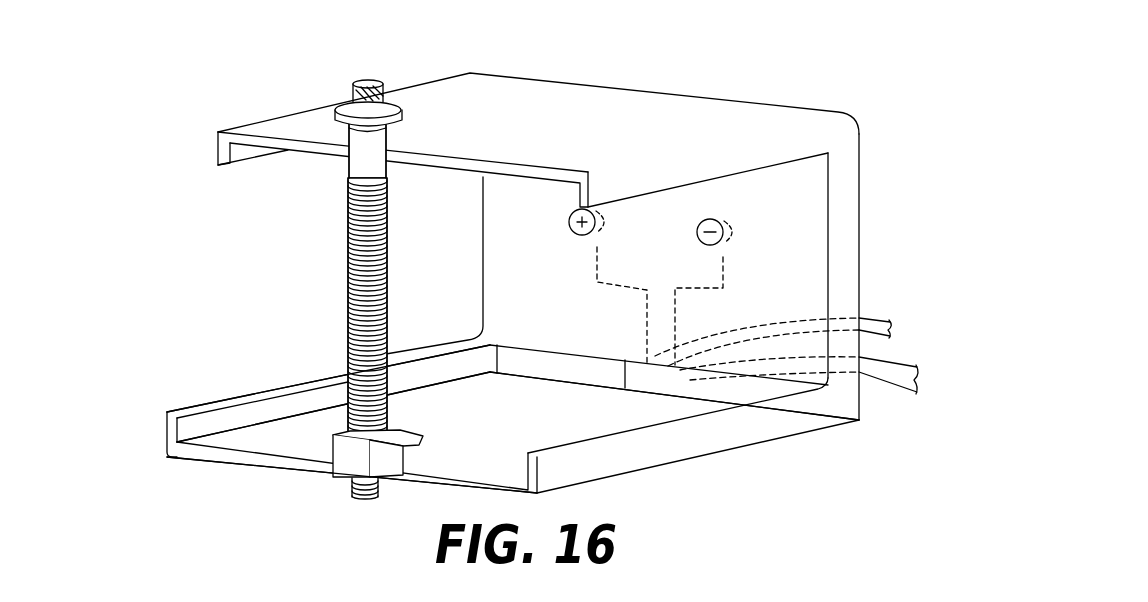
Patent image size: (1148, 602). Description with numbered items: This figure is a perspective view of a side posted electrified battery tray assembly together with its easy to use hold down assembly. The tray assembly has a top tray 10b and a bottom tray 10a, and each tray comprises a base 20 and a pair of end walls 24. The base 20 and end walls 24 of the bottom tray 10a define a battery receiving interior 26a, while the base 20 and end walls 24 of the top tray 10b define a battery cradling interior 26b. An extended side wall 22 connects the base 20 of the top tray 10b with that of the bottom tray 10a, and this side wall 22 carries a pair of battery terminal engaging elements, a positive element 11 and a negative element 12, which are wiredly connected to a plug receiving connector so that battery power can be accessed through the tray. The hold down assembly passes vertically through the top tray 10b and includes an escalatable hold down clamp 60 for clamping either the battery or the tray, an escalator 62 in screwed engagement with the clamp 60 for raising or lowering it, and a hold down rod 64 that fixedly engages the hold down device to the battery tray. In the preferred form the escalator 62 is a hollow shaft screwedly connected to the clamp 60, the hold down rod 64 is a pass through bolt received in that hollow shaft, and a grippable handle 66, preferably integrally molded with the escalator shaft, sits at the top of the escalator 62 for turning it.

The bottom tray 10a is at (155, 442).
The top tray 10b is at (527, 136).
The battery positive terminal engaging element 11 is at (571, 224).
The battery negative terminal engaging element 12 is at (720, 240).
The base 20 is at (318, 152).
The extended side wall 22 is at (850, 228).
The end walls 24 is at (768, 147).
The battery receiving interior 26a is at (510, 434).
The battery cradling interior 26b is at (457, 178).
The escalatable hold down clamp 60 is at (389, 452).
The escalator 62 is at (388, 253).
The hold down rod 64 is at (388, 92).
The grippable handle 66 is at (340, 104).